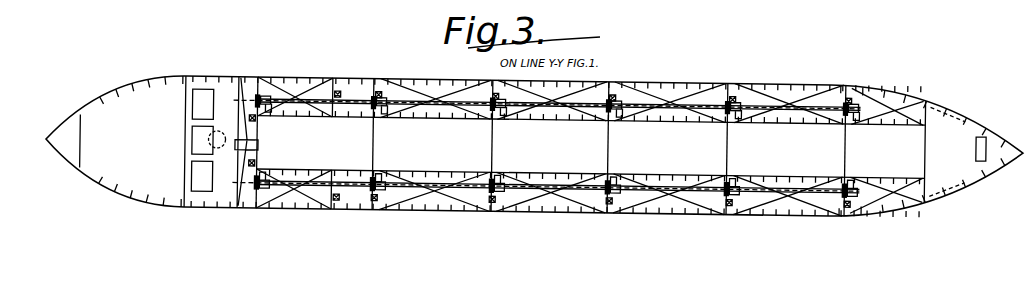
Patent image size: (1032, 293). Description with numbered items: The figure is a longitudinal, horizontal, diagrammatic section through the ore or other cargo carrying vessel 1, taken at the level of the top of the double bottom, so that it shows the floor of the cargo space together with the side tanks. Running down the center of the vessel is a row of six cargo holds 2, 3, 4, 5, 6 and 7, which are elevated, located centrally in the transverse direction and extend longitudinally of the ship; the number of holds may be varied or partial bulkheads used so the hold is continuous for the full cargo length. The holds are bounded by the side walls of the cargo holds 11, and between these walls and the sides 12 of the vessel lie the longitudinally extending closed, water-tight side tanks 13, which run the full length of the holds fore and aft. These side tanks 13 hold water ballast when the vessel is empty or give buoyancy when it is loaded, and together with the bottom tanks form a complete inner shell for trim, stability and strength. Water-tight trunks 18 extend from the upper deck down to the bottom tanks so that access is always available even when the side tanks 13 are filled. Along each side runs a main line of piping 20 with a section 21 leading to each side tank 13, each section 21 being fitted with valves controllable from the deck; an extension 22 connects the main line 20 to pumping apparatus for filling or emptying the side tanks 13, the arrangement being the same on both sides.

The ore or other cargo carrying vessel 1 is at (779, 216).
The cargo hold 2 is at (288, 142).
The cargo hold 3 is at (411, 144).
The cargo hold 4 is at (530, 145).
The cargo hold 5 is at (641, 147).
The cargo hold 6 is at (763, 149).
The cargo hold 7 is at (876, 150).
The side walls of the cargo holds 11 is at (395, 168).
The sides of the vessel 12 is at (315, 78).
The side tanks 13 is at (437, 84).
The water-tight trunks 18 is at (340, 89).
The main line of piping 20 is at (292, 189).
The section 21 is at (265, 174).
The extension 22 is at (255, 194).